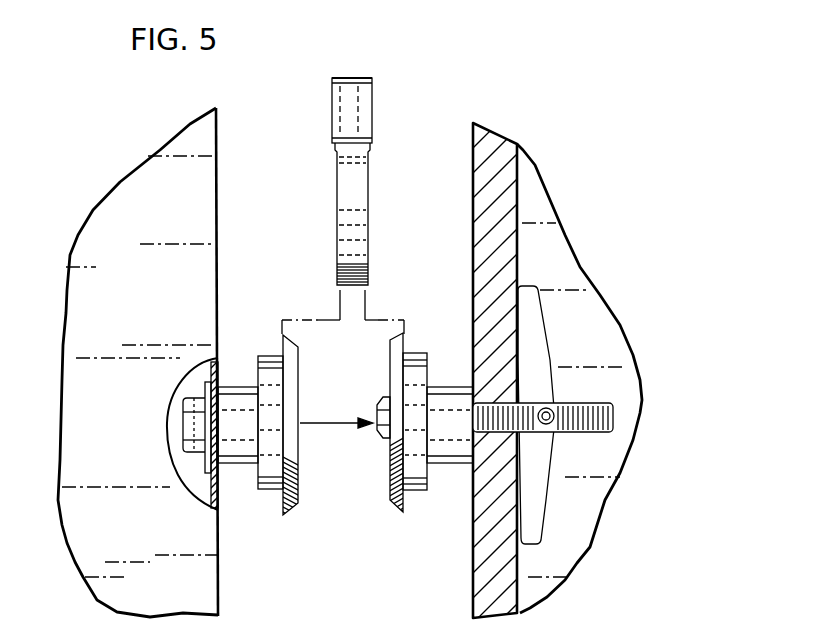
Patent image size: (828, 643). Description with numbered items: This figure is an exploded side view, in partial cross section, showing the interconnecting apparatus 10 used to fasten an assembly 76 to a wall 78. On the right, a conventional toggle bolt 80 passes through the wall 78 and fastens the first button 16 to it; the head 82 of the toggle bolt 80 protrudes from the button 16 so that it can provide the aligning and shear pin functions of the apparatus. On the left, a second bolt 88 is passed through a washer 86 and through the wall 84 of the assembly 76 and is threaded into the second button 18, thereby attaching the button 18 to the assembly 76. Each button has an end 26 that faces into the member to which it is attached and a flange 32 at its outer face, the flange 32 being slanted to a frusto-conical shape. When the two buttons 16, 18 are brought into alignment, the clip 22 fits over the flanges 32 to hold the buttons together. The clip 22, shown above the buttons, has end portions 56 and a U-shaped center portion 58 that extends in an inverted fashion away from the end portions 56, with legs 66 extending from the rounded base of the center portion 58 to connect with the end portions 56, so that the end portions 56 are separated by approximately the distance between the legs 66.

The interconnecting apparatus 10 is at (305, 228).
The first button 16 is at (410, 353).
The second button 18 is at (271, 356).
The clip 22 is at (364, 149).
The end 26 is at (222, 479).
The flange 32 is at (419, 491).
The end portions 56 is at (380, 231).
The center portion 58 is at (374, 71).
The legs 66 is at (373, 105).
The assembly 76 is at (222, 152).
The wall 78 is at (514, 143).
The toggle bolt 80 is at (600, 403).
The head 82 is at (384, 438).
The wall 84 is at (219, 478).
The washer 86 is at (205, 392).
The second bolt 88 is at (186, 428).